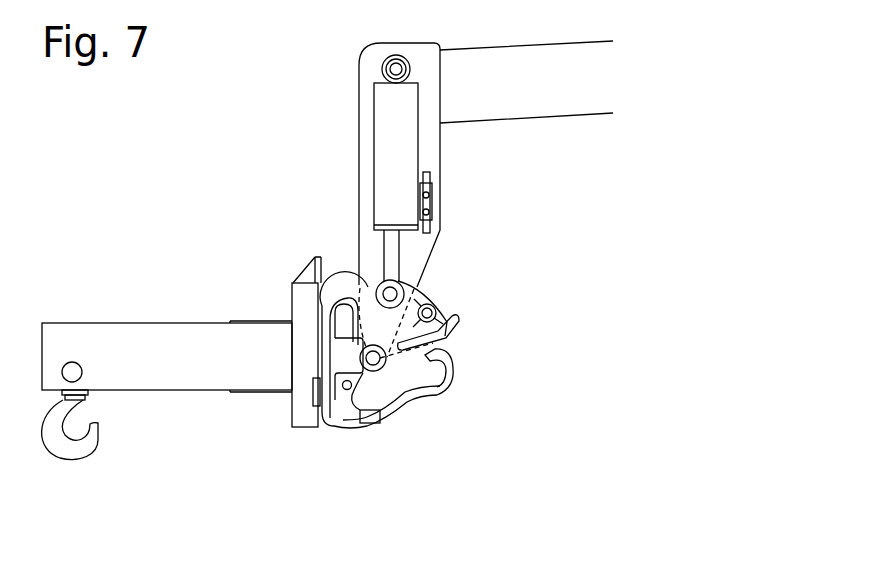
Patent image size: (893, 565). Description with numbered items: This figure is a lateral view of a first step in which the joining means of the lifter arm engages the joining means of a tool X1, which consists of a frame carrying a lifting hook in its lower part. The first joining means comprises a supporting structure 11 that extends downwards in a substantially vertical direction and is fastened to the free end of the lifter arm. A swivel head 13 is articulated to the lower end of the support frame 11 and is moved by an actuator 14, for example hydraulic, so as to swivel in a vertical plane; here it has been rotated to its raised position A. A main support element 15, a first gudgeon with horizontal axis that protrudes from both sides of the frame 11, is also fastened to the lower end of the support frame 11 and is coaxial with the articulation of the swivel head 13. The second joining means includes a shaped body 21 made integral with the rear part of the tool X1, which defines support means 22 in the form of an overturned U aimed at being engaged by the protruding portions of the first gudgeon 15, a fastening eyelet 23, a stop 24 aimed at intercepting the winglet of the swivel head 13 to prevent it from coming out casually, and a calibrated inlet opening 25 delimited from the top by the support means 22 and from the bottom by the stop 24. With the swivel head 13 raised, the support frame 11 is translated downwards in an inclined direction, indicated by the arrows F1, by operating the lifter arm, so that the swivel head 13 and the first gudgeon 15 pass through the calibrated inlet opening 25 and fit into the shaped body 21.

The supporting structure 11 is at (365, 93).
The swivel head 13 is at (442, 316).
The actuator 14 is at (398, 148).
The main support element 15 is at (376, 368).
The shaped body 21 is at (340, 258).
The support means 22 is at (340, 325).
The fastening eyelet 23 is at (346, 390).
The stop 24 is at (427, 388).
The calibrated inlet opening 25 is at (447, 345).
The tool X1 is at (112, 297).
The raised position A is at (430, 290).
The arrows of inclined downward translation F1 is at (355, 122).